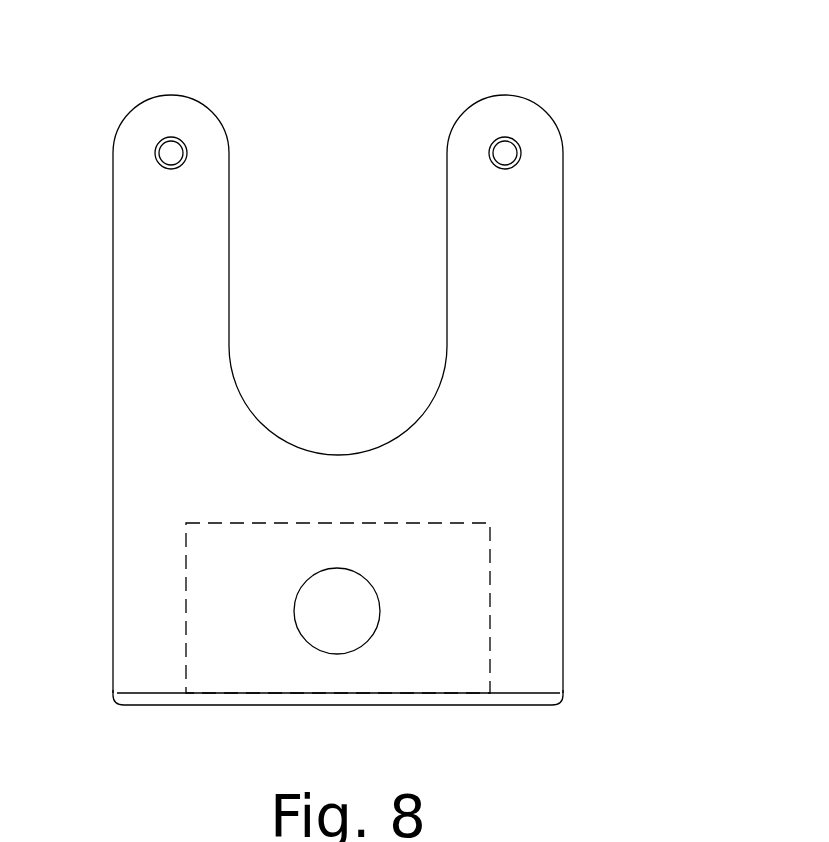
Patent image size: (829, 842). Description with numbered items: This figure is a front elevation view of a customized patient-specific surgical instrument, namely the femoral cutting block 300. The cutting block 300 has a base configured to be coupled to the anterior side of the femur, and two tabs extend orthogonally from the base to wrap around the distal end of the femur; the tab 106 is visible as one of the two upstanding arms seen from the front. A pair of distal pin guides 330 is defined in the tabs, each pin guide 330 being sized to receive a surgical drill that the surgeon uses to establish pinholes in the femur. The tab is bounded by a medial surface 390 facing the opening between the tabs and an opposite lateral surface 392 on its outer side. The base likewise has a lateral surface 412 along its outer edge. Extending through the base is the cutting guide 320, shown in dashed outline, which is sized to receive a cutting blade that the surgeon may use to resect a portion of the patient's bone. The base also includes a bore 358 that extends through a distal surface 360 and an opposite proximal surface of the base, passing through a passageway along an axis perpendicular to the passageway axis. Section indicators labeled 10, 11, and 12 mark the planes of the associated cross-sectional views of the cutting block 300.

The femoral cutting block 300 is at (395, 366).
The tab 106 is at (563, 302).
The distal pin guide 330 is at (190, 130).
The medial surface 390 is at (229, 220).
The lateral surface 392 is at (113, 213).
The lateral surface 412 is at (113, 335).
The cutting guide 320 is at (490, 532).
The bore 358 is at (350, 600).
The distal surface 360 is at (545, 647).
The section line 10- 10 is at (338, 427).
The section line 11- 11 is at (145, 153).
The section line 12- 12 is at (93, 611).